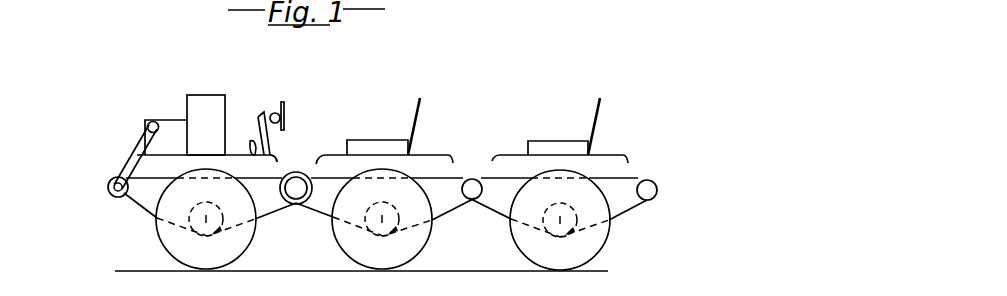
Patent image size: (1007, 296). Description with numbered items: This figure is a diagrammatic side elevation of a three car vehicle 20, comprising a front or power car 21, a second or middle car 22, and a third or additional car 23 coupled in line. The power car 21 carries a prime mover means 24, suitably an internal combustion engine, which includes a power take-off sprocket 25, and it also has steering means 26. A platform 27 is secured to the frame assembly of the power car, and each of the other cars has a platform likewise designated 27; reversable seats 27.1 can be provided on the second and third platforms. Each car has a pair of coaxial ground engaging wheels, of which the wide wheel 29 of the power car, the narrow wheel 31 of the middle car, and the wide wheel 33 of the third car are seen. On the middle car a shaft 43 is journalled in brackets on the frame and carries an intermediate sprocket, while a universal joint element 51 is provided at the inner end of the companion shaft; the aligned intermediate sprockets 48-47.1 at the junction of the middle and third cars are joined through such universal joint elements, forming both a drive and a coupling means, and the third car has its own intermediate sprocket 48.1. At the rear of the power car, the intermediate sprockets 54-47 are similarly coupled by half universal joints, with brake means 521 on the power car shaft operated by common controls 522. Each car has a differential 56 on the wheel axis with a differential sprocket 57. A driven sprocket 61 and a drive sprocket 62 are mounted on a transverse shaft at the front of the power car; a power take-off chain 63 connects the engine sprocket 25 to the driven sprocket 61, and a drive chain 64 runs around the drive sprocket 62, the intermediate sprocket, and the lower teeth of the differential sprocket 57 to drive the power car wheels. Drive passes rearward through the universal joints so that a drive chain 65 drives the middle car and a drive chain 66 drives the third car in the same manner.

The three car vehicle 20 is at (152, 66).
The power car 21 is at (244, 105).
The middle car 22 is at (372, 105).
The additional car 23 is at (558, 105).
The prime mover means 24 is at (222, 94).
The power take-off sprocket 25 is at (156, 121).
The steering means 26 is at (285, 118).
The platform 27 is at (212, 155).
The seats 27.1 is at (418, 108).
The wheel 29 is at (178, 254).
The wheel 31 is at (352, 254).
The wheel 33 is at (524, 256).
The shaft 43 is at (323, 217).
The intermediate sprockets 48-47.1 is at (473, 168).
The intermediate sprocket 48.1 is at (666, 172).
The universal joint element 51 is at (296, 200).
The intermediate sprockets 54-47 is at (318, 163).
The differential 56 is at (199, 208).
The differential sprocket 57 is at (233, 204).
The driven sprocket 61 is at (112, 197).
The drive sprocket 62 is at (108, 188).
The power take-off chain 63 is at (131, 152).
The drive chain 64 is at (258, 224).
The drive chain 65 is at (444, 216).
The drive chain 66 is at (620, 214).
The brake means 521 is at (328, 140).
The common controls 522 is at (246, 148).